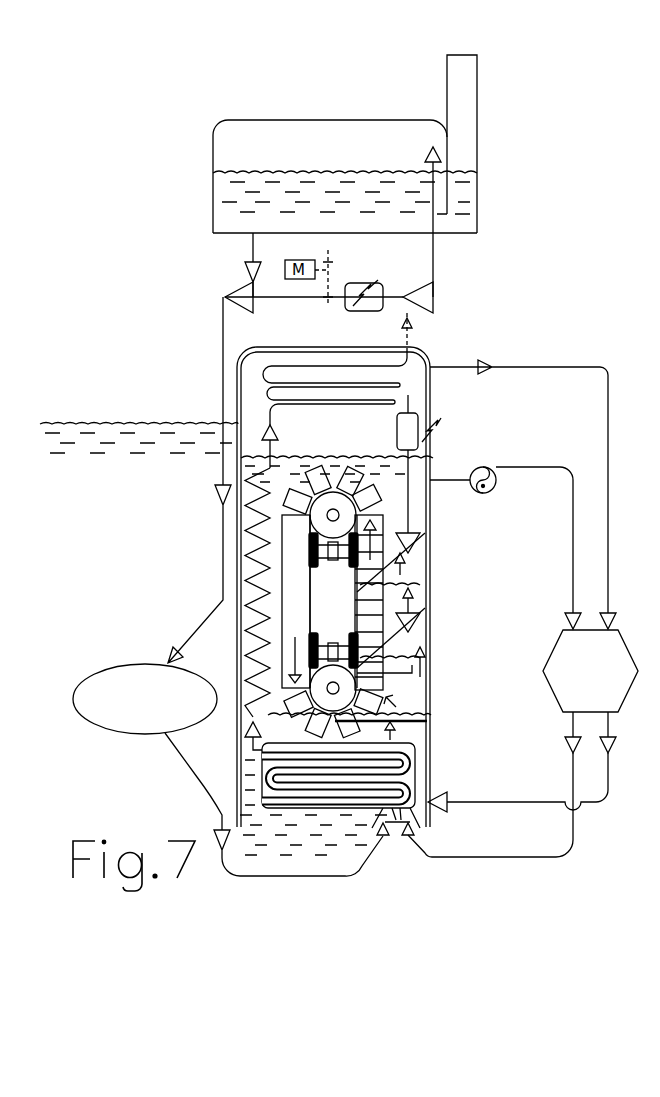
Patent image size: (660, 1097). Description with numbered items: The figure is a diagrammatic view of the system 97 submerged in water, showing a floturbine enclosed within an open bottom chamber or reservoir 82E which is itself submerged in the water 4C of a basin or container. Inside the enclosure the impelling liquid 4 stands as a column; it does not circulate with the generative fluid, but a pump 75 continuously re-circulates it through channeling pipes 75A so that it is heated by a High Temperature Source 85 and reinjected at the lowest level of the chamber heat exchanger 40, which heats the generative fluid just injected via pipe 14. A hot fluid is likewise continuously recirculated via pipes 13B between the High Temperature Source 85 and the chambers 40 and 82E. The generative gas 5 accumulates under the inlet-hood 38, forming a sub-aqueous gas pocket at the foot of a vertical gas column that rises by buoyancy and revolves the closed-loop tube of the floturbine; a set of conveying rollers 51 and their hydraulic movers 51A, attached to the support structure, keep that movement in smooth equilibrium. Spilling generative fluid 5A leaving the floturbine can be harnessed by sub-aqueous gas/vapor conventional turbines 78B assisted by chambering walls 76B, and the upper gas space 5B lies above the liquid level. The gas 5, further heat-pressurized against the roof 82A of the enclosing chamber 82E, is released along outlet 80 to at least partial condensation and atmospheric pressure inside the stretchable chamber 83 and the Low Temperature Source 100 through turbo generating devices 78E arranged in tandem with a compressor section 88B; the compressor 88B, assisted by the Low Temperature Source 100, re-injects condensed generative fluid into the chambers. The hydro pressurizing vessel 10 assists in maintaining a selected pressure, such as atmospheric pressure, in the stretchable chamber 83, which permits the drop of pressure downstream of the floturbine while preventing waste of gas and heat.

The snow melting system 97 is at (612, 208).
The stretchable chamber 83 is at (213, 150).
The hydro pressurizing vessel 10 is at (477, 108).
The compressor section 88B is at (237, 290).
The turbo generating devices 78E is at (435, 300).
The roof 82A is at (345, 347).
The upper chamber 5B is at (348, 448).
The outlet pipe 80 is at (410, 400).
The open bottom chamber 82E is at (430, 452).
The pump 75 is at (490, 472).
The water 4C is at (115, 490).
The conveying rollers 51 is at (312, 558).
The hydraulic movers 51A is at (317, 565).
The gas/vapor conventional turbine 78B is at (420, 540).
The spilling generative fluid 5A is at (425, 570).
The impelling liquid 4 is at (399, 523).
The walls 76B is at (422, 630).
The gas 5 is at (425, 706).
The inlet-hood 38 is at (425, 737).
The chamber heat exchanger 40 is at (425, 760).
The pipes 13B is at (535, 803).
The High Temperature Source 85 is at (605, 690).
The channeling pipes 75A is at (570, 540).
The Low Temperature Source 100 is at (178, 716).
The pipe 14 is at (197, 778).